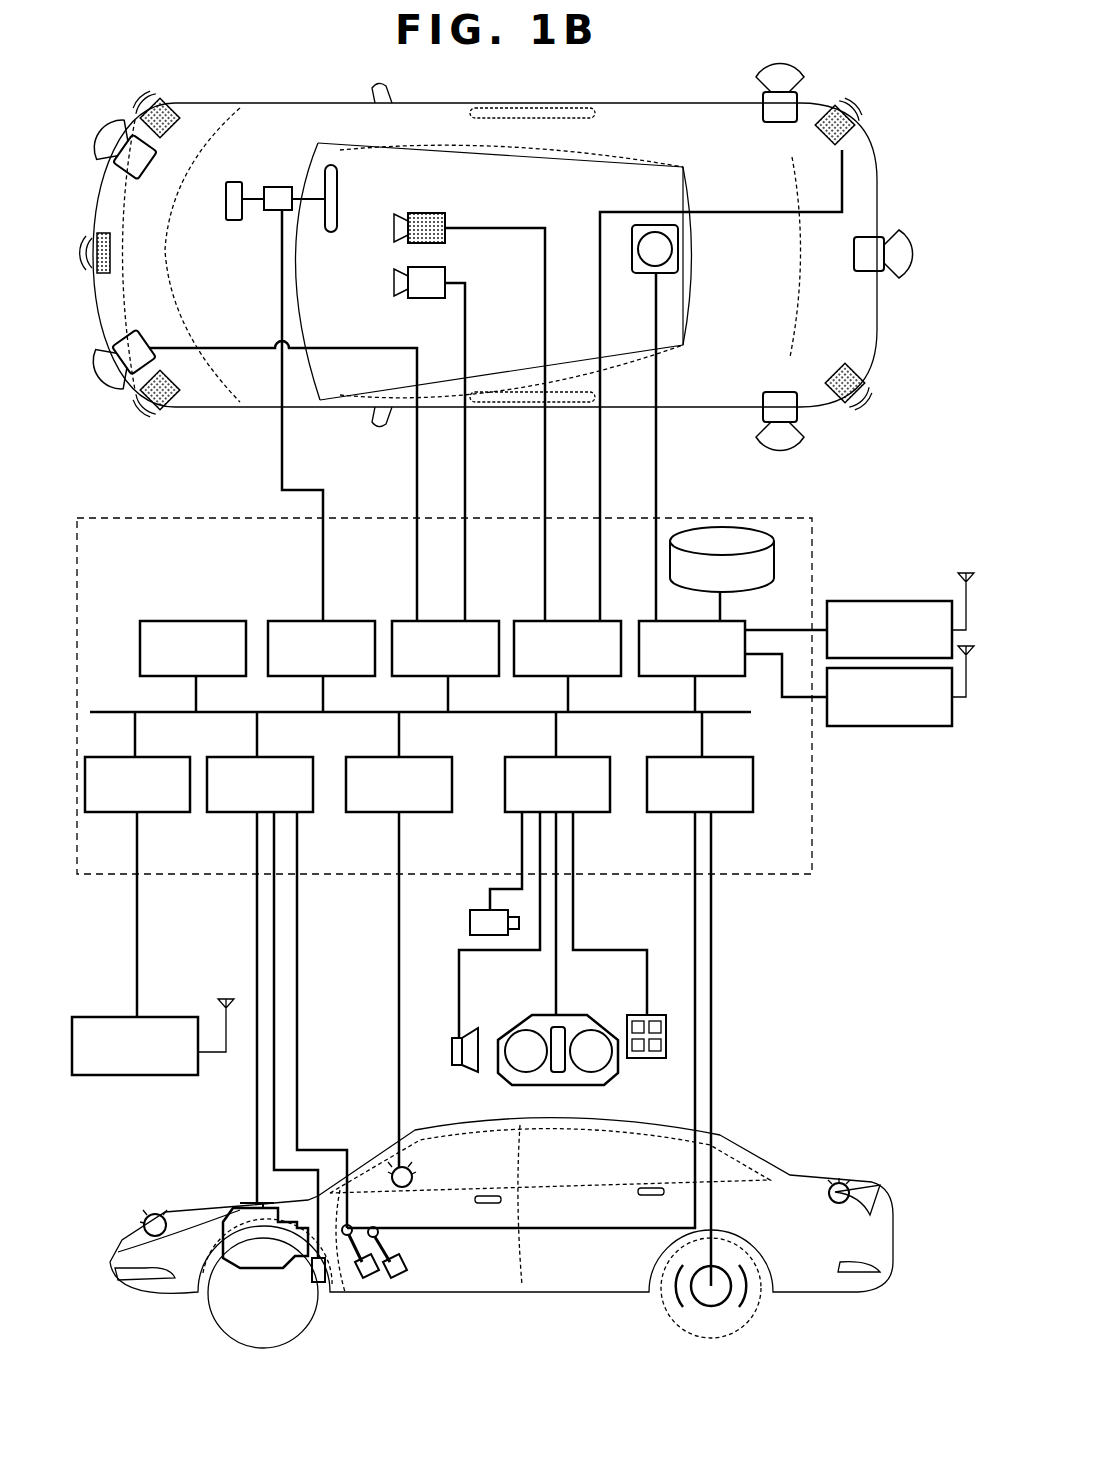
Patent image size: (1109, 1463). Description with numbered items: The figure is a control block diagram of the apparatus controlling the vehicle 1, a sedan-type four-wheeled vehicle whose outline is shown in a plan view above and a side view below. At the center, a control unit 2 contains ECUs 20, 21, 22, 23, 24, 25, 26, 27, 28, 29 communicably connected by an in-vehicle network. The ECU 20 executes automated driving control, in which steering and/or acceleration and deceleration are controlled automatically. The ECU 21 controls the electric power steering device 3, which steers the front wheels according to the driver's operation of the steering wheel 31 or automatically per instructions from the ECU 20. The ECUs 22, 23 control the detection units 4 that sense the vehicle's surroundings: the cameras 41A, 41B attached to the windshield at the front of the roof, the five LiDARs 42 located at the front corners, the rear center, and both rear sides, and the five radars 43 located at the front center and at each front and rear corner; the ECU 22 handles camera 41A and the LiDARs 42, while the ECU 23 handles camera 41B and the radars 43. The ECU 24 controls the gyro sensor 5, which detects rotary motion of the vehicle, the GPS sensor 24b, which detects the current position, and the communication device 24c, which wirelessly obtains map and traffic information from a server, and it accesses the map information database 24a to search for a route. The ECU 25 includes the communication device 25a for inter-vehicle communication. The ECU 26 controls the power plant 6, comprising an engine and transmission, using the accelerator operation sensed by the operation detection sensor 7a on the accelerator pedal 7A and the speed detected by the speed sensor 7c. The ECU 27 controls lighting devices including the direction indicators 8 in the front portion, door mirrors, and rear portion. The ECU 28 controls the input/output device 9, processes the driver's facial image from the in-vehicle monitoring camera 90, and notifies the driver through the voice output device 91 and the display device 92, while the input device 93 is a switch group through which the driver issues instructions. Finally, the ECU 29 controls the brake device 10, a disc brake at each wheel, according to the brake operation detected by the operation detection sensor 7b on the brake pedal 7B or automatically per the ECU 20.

The vehicle 1 is at (898, 160).
The control unit 2 is at (795, 876).
The electric power steering device 3 is at (234, 222).
The steering wheel 31 is at (332, 234).
The detection unit 4 is at (120, 110).
The camera 41A is at (420, 300).
The camera 41B is at (460, 243).
The LiDAR 42 is at (140, 178).
The radar 43 is at (165, 132).
The gyro sensor 5 is at (680, 250).
The power plant 6 is at (230, 1206).
The operation detection sensor 7a is at (350, 1222).
The accelerator pedal 7A is at (378, 1275).
The operation detection sensor 7b is at (378, 1228).
The brake pedal 7B is at (406, 1265).
The speed sensor 7c is at (318, 1284).
The direction indicators 8 is at (145, 1218).
The input/output device 9 is at (485, 1087).
The brake device 10 is at (718, 1312).
The ECU 20 is at (226, 618).
The ECU 21 is at (352, 618).
The ECU 22 is at (442, 618).
The ECU 23 is at (574, 618).
The ECU 24 is at (640, 618).
The map information database 24a is at (726, 525).
The GPS sensor 24b is at (888, 598).
The communication device 24c is at (870, 730).
The ECU 25 is at (167, 815).
The communication device 25a is at (135, 1078).
The ECU 26 is at (230, 815).
The ECU 27 is at (430, 815).
The ECU 28 is at (596, 815).
The ECU 29 is at (736, 815).
The in-vehicle monitoring camera 90 is at (470, 918).
The voice output device 91 is at (450, 1040).
The display device 92 is at (512, 1025).
The input device 93 is at (640, 1060).